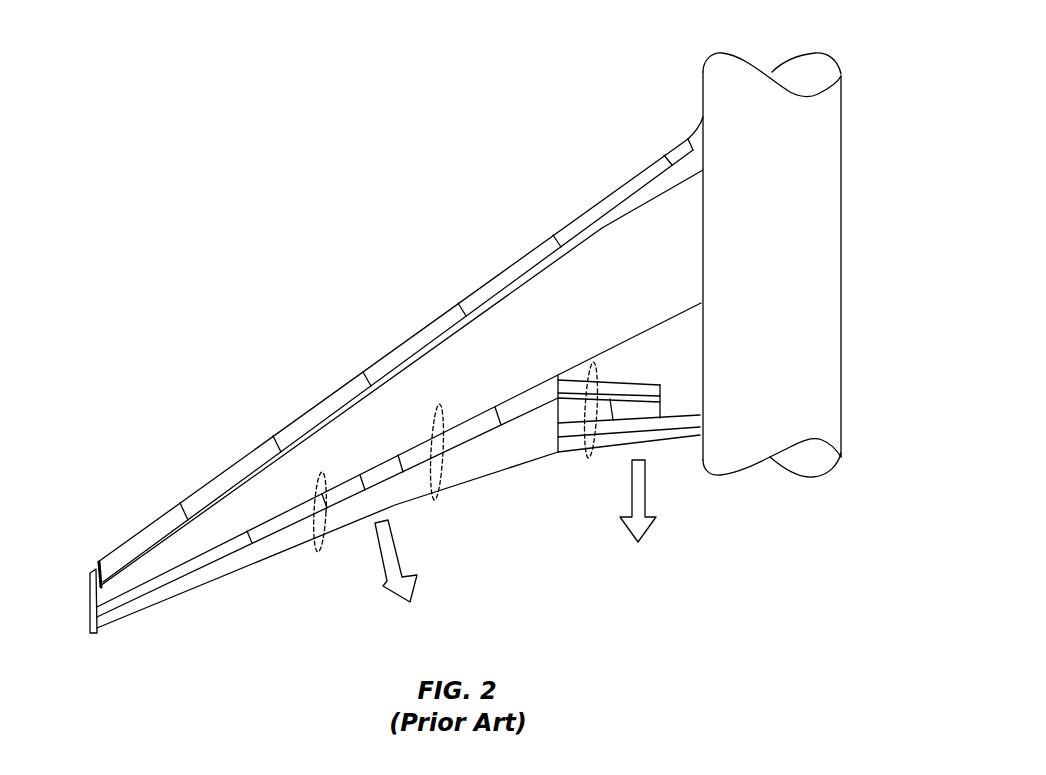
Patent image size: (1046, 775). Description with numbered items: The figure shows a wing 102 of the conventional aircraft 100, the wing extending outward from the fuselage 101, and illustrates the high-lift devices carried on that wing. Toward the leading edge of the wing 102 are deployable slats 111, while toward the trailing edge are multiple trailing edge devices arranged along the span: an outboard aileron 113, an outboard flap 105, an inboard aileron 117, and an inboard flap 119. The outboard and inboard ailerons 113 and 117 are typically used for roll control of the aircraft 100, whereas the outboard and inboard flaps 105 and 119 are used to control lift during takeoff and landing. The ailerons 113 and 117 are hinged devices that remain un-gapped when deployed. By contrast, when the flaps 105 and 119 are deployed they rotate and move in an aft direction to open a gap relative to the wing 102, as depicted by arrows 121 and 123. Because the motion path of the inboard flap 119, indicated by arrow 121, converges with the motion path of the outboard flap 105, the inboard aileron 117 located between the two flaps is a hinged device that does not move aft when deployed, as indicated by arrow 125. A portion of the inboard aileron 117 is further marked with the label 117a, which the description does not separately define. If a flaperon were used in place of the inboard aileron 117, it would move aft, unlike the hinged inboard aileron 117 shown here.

The aircraft 100 is at (783, 34).
The fuselage 101 is at (700, 98).
The wing 102 is at (130, 466).
The outboard flap 105 is at (472, 482).
The deployable slats 111 is at (491, 281).
The outboard aileron 113 is at (184, 588).
The inboard aileron 117 is at (533, 447).
The bracket base 117a is at (560, 458).
The inboard flap 119 is at (662, 437).
The arrow 121 is at (628, 504).
The arrow 123 is at (386, 566).
The arrow 125 is at (535, 425).